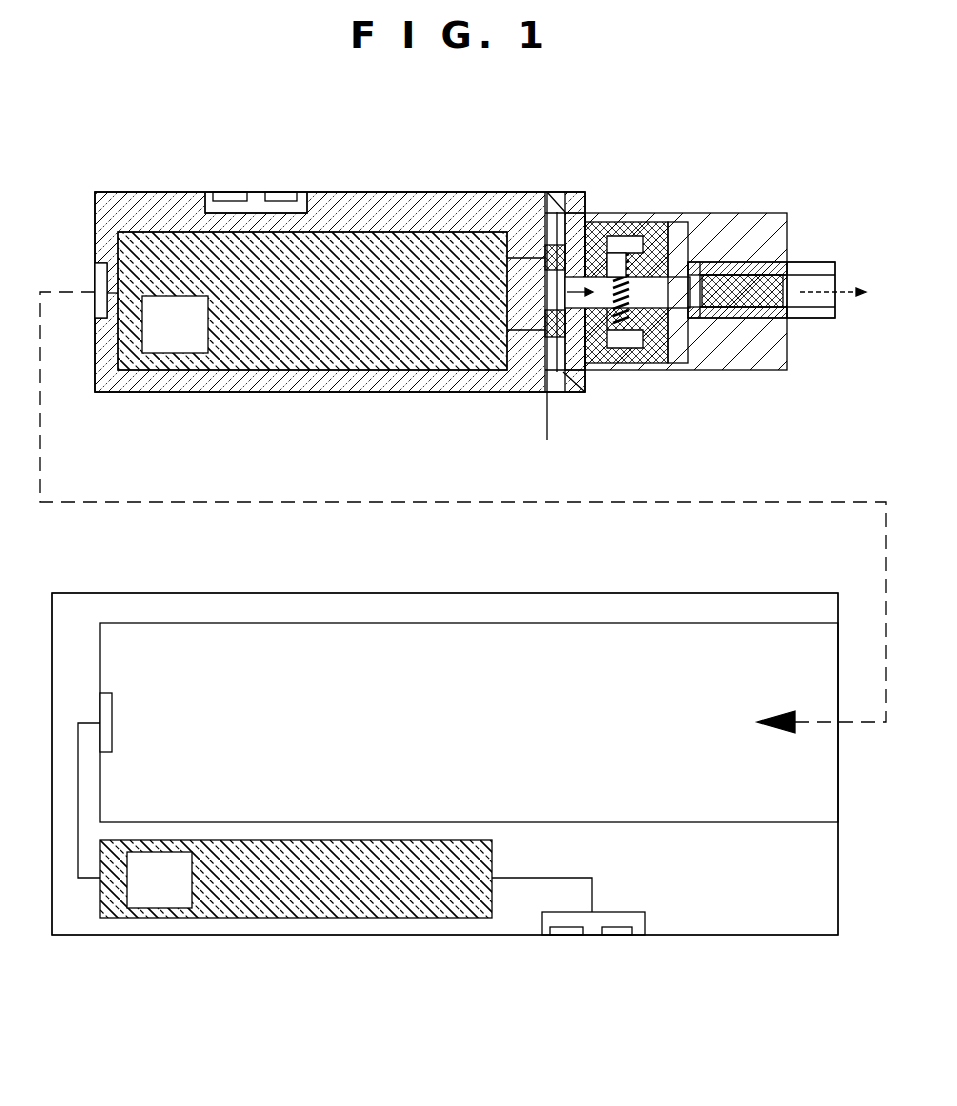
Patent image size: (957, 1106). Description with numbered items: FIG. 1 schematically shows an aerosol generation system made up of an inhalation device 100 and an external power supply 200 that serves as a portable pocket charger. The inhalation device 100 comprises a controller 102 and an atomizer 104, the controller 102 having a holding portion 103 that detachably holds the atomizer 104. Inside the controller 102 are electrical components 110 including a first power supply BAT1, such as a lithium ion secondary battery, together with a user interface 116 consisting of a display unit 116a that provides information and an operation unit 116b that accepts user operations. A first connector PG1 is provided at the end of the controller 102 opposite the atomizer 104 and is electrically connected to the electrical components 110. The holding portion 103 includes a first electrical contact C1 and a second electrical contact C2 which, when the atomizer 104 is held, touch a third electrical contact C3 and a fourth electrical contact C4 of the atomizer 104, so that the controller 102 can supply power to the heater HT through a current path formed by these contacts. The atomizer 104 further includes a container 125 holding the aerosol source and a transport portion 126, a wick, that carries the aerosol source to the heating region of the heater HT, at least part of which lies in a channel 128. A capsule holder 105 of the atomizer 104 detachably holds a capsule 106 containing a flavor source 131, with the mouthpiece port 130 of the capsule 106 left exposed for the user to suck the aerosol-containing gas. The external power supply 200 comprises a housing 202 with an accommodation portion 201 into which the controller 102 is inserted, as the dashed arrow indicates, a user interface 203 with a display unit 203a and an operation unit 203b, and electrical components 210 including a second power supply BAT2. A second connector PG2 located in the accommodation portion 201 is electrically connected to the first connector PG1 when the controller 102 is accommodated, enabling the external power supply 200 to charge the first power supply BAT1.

The inhalation device 100 is at (787, 146).
The controller 102 is at (402, 192).
The holding portion 103 is at (578, 192).
The atomizer 104 is at (733, 213).
The capsule holder 105 is at (748, 260).
The capsule 106 is at (820, 262).
The electrical components 110 is at (362, 392).
The user interface 116 is at (262, 146).
The display unit 116a is at (230, 192).
The operation unit 116b is at (296, 168).
The container 125 is at (653, 222).
The transport portion (wick) 126 is at (623, 362).
The channel 128 is at (638, 304).
The mouthpiece port 130 is at (835, 283).
The flavor source 131 is at (787, 292).
The first electrical contact C1 is at (547, 192).
The second electrical contact C2 is at (547, 392).
The third electrical contact C3 is at (562, 248).
The fourth electrical contact C4 is at (588, 372).
The heater HT is at (628, 322).
The first connector PG1 is at (95, 280).
The first power supply BAT1 is at (178, 353).
The external power supply 200 is at (789, 576).
The accommodation portion 201 is at (458, 730).
The housing 202 is at (210, 593).
The user interface 203 is at (589, 973).
The display unit 203a is at (565, 936).
The operation unit 203b is at (625, 959).
The electrical components 210 is at (318, 918).
The second connector PG2 is at (106, 693).
The second power supply BAT2 is at (150, 908).